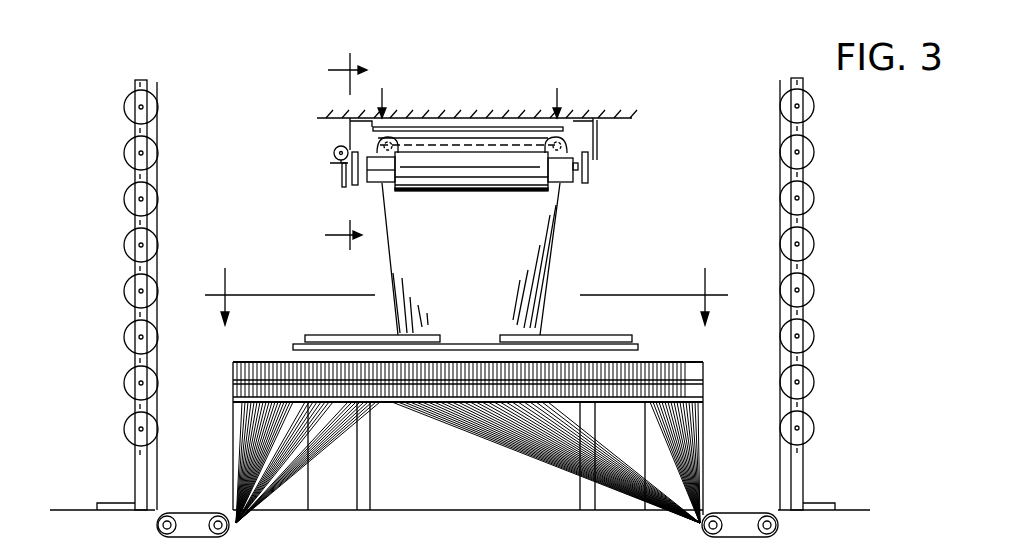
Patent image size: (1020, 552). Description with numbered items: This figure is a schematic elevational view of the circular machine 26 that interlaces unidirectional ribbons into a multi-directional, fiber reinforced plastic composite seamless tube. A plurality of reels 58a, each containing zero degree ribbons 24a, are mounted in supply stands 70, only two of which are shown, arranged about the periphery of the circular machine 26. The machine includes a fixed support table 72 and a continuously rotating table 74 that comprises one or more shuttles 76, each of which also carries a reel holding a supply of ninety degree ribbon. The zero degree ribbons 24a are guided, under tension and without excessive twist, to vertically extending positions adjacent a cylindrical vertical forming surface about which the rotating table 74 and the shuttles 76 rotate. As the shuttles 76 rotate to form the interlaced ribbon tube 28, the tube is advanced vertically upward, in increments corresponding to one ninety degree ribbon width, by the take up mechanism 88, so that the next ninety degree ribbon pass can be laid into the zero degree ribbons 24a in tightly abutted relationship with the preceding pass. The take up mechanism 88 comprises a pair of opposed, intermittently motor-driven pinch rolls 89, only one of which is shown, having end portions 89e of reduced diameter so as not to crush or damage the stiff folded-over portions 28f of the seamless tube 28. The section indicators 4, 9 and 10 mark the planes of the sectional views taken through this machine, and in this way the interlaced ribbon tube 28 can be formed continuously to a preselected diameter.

The supply stands 70 is at (178, 87).
The reels 58a is at (124, 245).
The 0 degree ribbons 24a is at (159, 222).
The fixed support table 72 is at (707, 392).
The continuously rotating table 74 is at (650, 347).
The shuttles 76 is at (625, 338).
The circular machine 26 is at (634, 97).
The folded-over portions 28f is at (377, 143).
The interlaced ribbon tube 28 is at (464, 140).
The pinch rolls 89 is at (516, 183).
The end portions 89e is at (372, 182).
The take up mechanism 88 is at (313, 165).
The section line 10- 10 is at (485, 88).
The section line 9- 9 is at (332, 152).
The section line 4- 4 is at (466, 282).